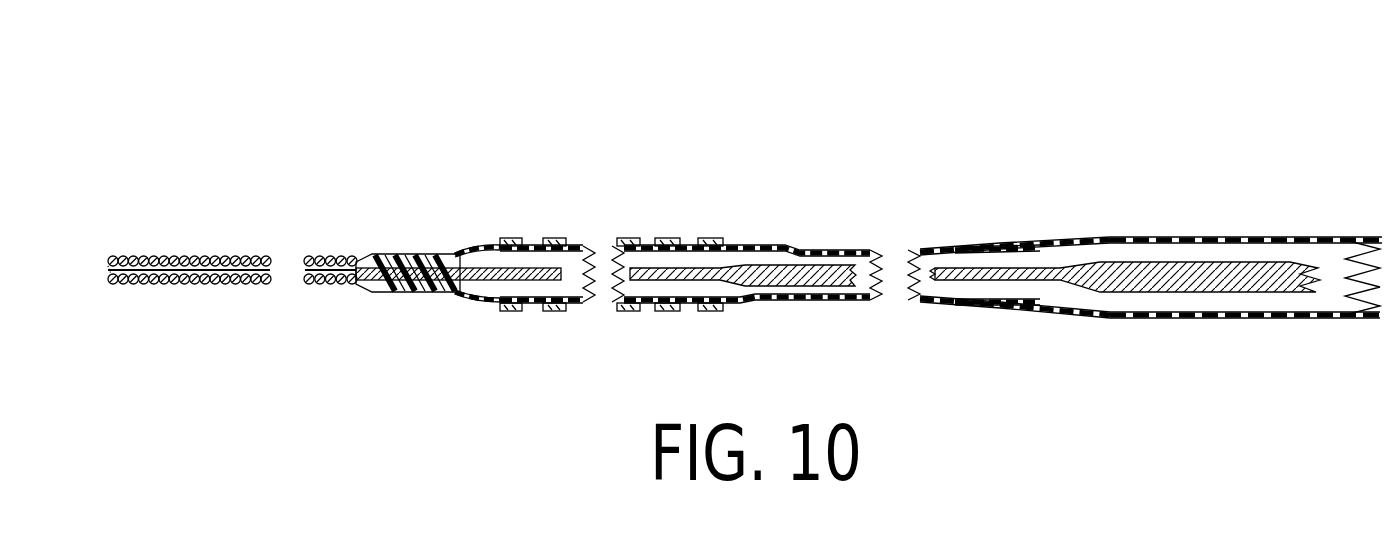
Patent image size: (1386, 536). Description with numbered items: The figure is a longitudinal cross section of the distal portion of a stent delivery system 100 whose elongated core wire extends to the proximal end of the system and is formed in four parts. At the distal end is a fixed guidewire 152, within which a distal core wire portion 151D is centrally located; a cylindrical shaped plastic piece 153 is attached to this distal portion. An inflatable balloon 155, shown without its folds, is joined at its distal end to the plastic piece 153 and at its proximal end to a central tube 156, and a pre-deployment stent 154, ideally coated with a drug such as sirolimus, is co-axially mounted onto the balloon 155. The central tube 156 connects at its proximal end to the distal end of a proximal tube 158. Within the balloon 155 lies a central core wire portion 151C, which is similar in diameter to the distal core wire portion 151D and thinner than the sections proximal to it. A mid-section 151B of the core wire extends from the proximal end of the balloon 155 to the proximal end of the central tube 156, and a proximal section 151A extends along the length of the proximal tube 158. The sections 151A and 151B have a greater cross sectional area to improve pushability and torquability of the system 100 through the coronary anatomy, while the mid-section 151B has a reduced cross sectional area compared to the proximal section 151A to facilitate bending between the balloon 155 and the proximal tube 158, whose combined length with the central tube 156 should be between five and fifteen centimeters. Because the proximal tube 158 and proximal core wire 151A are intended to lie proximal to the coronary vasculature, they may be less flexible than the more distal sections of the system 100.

The stent delivery system 100 is at (823, 90).
The proximal section of the core wire 151A is at (1200, 292).
The mid-section of the core wire 151B is at (818, 282).
The central core wire portion 151C is at (488, 268).
The distal core wire portion 151D is at (273, 270).
The fixed guidewire 152 is at (150, 255).
The cylindrical shaped plastic piece 153 is at (362, 290).
The pre-deployment stent 154 is at (625, 238).
The inflatable balloon 155 is at (480, 298).
The central tube 156 is at (852, 248).
The proximal tube 158 is at (1128, 235).